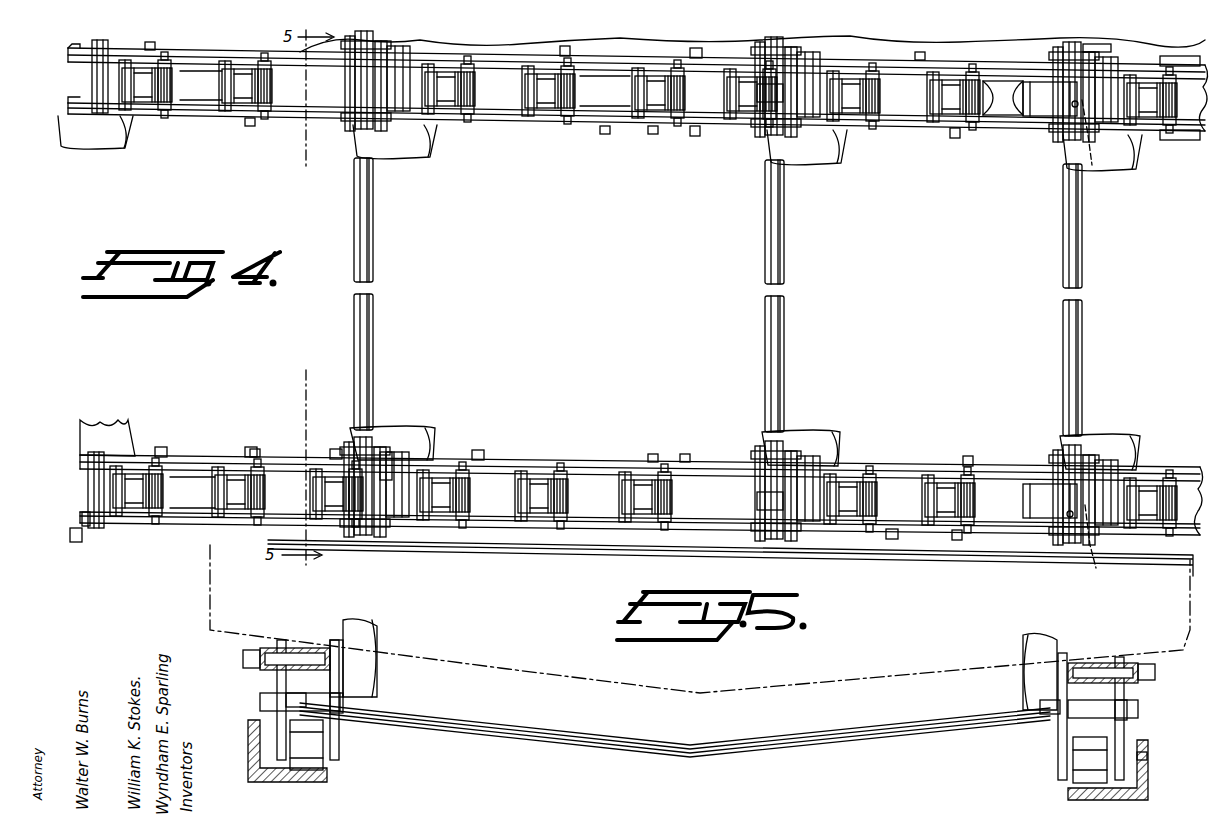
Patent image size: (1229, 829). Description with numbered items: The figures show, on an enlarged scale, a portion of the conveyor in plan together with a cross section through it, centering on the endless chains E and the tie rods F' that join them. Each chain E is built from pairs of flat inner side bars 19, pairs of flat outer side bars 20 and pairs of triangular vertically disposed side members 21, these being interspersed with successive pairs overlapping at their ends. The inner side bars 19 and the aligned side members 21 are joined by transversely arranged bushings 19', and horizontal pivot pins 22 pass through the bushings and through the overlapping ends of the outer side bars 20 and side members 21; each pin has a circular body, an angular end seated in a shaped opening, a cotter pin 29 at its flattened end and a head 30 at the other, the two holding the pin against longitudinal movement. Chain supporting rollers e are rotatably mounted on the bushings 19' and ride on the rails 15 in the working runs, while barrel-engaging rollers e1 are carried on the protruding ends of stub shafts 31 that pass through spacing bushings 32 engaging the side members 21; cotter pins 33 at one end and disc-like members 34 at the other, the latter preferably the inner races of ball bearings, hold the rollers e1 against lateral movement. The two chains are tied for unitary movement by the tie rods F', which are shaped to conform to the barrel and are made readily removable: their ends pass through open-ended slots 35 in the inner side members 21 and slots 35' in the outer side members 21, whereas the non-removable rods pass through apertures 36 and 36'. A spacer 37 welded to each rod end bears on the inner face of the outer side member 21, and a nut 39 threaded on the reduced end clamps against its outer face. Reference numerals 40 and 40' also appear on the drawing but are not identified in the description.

In FIG. 4, the rails 15 is at (600, 62).
In FIG. 5, the rails 15 is at (420, 548).
In FIG. 4, the inner parallel side bars 19 is at (636, 91).
In FIG. 5, the inner parallel side bars 19 is at (640, 612).
In FIG. 4, the transversely arranged bushings 19' is at (548, 88).
In FIG. 5, the transversely arranged bushings 19' is at (535, 482).
In FIG. 4, the outer parallel side bars 20 is at (222, 56).
In FIG. 5, the outer parallel side bars 20 is at (200, 457).
In FIG. 4, the triangular vertically disposed side members 21 is at (92, 56).
In FIG. 5, the triangular vertically disposed side members 21 is at (88, 470).
In FIG. 4, the horizontal pivot pins 22 is at (150, 48).
In FIG. 5, the horizontal pivot pins 22 is at (518, 493).
In FIG. 4, the cotter pin 29 is at (565, 48).
In FIG. 5, the cotter pin 29 is at (957, 542).
In FIG. 4, the head 30 is at (694, 50).
In FIG. 5, the head 30 is at (160, 456).
In FIG. 5, the stub shafts 31 is at (76, 532).
In FIG. 5, the spacing bushings 32 is at (386, 460).
In FIG. 5, the cotter pins 33 is at (82, 520).
In FIG. 5, the disc-like members 34 is at (340, 640).
In FIG. 5, the open-ended slots 35 is at (749, 689).
In FIG. 5, the open-ended slots 35' is at (670, 711).
In FIG. 4, the apertures 36 is at (1102, 135).
In FIG. 5, the apertures 36 is at (1100, 459).
In FIG. 4, the apertures 36' is at (1100, 46).
In FIG. 5, the apertures 36' is at (1093, 544).
In FIG. 4, the spacer 37 is at (768, 88).
In FIG. 5, the spacer 37 is at (757, 500).
In FIG. 4, the nut 39 is at (385, 56).
In FIG. 5, the nut 39 is at (368, 545).
In FIG. 4, the link block 40 is at (1050, 99).
In FIG. 5, the link block 40 is at (1036, 501).
In FIG. 5, the link block pin 40' is at (1031, 518).
In FIG. 4, the chain supporting rollers e is at (218, 80).
In FIG. 5, the chain supporting rollers e is at (211, 492).
In FIG. 4, the barrel-engaging rollers e1 is at (130, 142).
In FIG. 5, the barrel-engaging rollers e1 is at (128, 424).
In FIG. 4, the endless chains E is at (653, 134).
In FIG. 5, the endless chains E is at (697, 600).
In FIG. 4, the removable tie rods F' is at (732, 297).
In FIG. 5, the removable tie rods F' is at (675, 736).